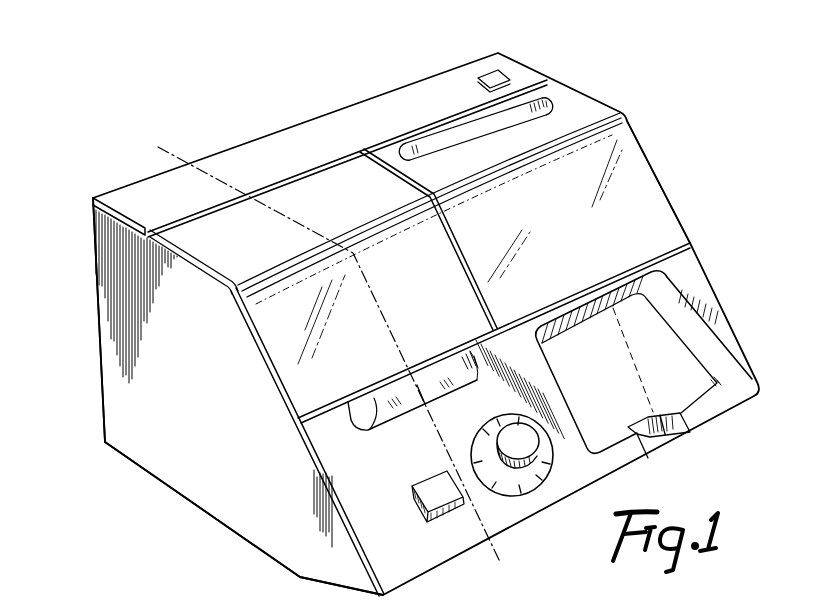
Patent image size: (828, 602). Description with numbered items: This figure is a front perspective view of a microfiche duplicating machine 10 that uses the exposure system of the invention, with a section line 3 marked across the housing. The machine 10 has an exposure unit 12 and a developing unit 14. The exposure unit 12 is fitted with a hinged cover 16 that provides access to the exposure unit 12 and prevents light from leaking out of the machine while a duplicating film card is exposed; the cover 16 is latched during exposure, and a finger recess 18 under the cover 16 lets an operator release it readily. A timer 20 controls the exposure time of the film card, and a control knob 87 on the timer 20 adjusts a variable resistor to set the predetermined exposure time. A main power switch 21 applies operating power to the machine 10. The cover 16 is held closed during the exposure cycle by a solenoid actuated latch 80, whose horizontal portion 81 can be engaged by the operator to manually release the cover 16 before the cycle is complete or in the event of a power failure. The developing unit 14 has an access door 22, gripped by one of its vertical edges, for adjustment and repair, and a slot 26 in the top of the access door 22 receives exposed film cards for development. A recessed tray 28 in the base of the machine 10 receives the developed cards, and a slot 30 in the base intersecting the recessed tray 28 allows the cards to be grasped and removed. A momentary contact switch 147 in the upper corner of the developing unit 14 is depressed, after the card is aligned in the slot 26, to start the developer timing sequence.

The microfiche duplicating machine 10 is at (318, 96).
The exposure unit 12 is at (78, 335).
The developing unit 14 is at (666, 137).
The hinged cover 16 is at (260, 303).
The finger recess 18 is at (455, 373).
The timer 20 is at (548, 478).
The main power switch 21 is at (437, 504).
The access door 22 is at (643, 193).
The slot 26 is at (545, 98).
The recessed tray 28 is at (682, 362).
The slot 30 is at (655, 436).
The solenoid actuated latch 80 is at (373, 427).
The horizontal portion 81 is at (425, 404).
The control knob 87 is at (538, 448).
The switch 147 is at (497, 70).
The section line 3- 3 is at (155, 148).